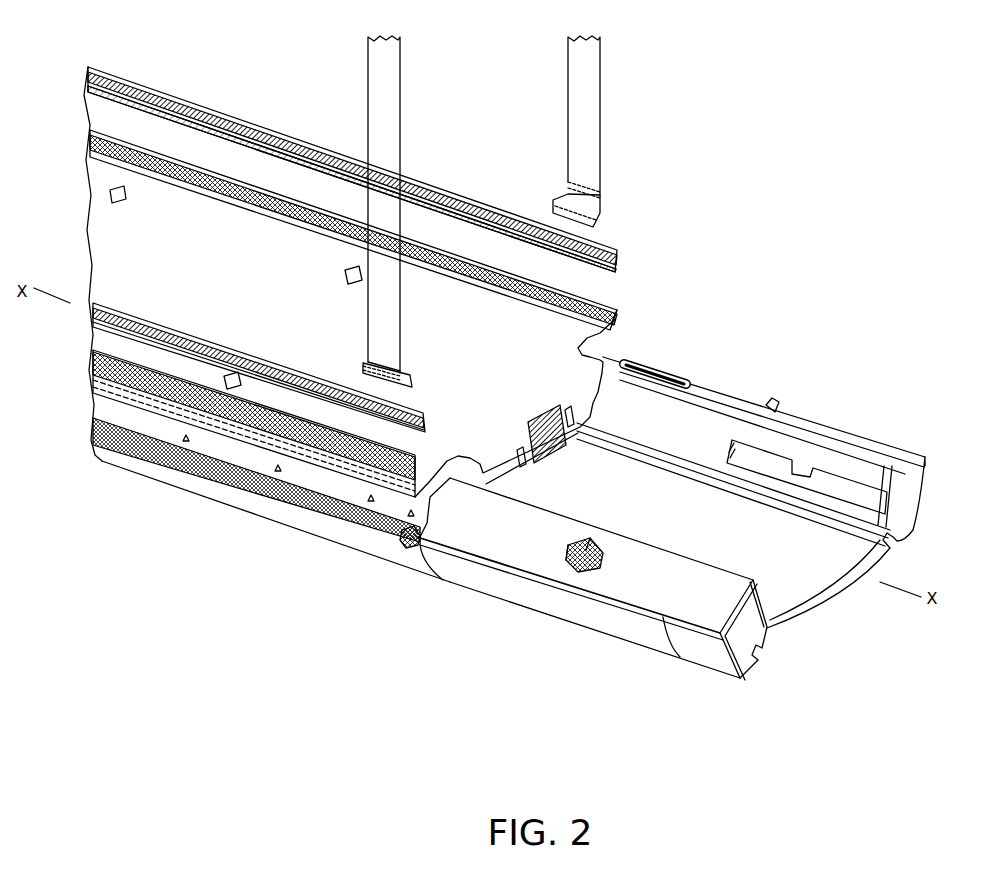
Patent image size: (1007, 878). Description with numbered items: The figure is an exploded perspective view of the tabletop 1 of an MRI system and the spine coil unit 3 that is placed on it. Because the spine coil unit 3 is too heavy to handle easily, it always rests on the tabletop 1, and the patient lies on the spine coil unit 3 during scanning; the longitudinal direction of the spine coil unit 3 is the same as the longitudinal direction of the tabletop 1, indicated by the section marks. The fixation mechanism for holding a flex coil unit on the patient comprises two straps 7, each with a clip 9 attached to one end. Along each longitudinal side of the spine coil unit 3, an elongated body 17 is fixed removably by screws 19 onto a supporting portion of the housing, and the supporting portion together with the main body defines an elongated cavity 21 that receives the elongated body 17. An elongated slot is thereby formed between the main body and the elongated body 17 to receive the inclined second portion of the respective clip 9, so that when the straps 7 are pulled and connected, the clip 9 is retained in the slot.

The tabletop 1 is at (518, 563).
The spine coil unit 3 is at (577, 320).
The strap 7 is at (403, 85).
The clip 9 is at (600, 212).
The elongated body 17 is at (245, 110).
The screw 19 is at (365, 500).
The elongated cavity 21 is at (577, 303).